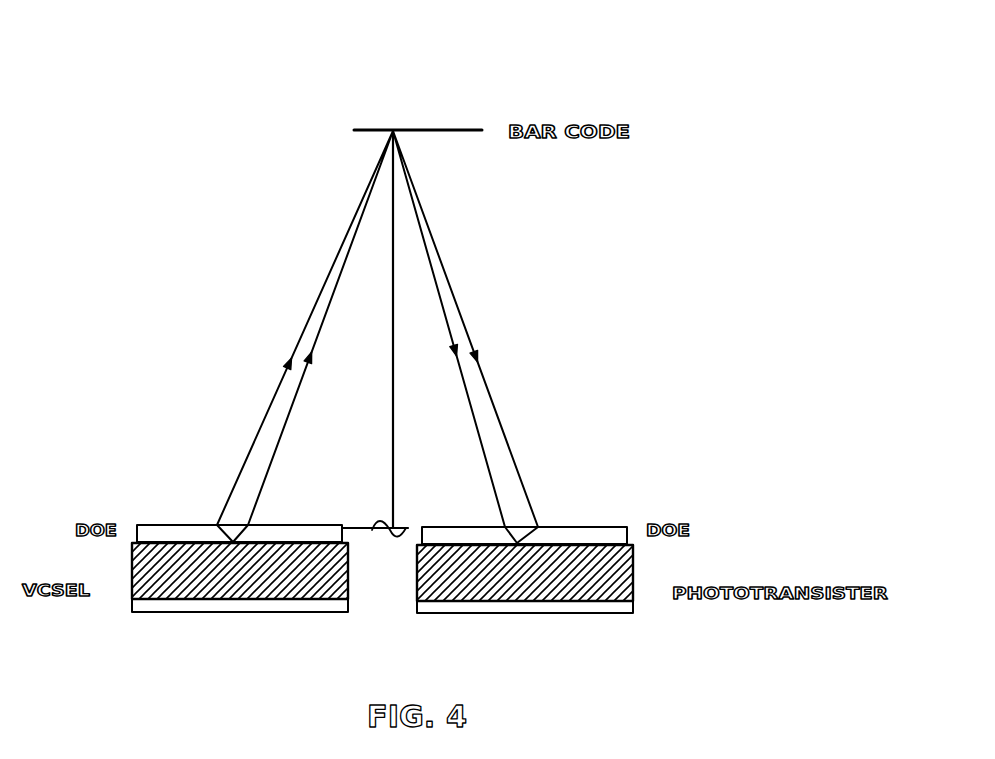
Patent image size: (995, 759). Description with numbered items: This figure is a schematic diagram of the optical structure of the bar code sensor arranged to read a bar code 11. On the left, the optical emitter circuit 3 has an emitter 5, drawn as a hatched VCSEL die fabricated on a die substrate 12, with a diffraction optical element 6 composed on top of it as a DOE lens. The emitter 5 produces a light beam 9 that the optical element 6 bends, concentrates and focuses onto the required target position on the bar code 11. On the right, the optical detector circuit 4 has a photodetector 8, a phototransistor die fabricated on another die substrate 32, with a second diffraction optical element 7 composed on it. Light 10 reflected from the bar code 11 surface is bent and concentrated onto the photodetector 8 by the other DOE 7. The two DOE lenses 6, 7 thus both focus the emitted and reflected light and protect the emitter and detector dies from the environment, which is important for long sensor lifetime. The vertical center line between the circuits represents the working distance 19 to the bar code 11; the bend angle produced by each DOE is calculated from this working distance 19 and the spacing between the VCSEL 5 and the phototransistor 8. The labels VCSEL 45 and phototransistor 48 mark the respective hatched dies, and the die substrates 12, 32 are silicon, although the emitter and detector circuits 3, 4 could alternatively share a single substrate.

The optical emitter circuit 3 is at (167, 623).
The optical detector circuit 4 is at (592, 628).
The emitter 5 is at (360, 603).
The optical element 6 is at (157, 525).
The optical element 7 is at (605, 527).
The photodetector 8 is at (646, 612).
The light beam 9 is at (310, 318).
The reflected light 10 is at (472, 316).
The bar code 11 is at (448, 129).
The die substrate 12 is at (231, 612).
The working distance 19 is at (390, 441).
The die substrate 32 is at (521, 613).
The VCSEL 45 is at (132, 568).
The phototransistor 48 is at (633, 565).